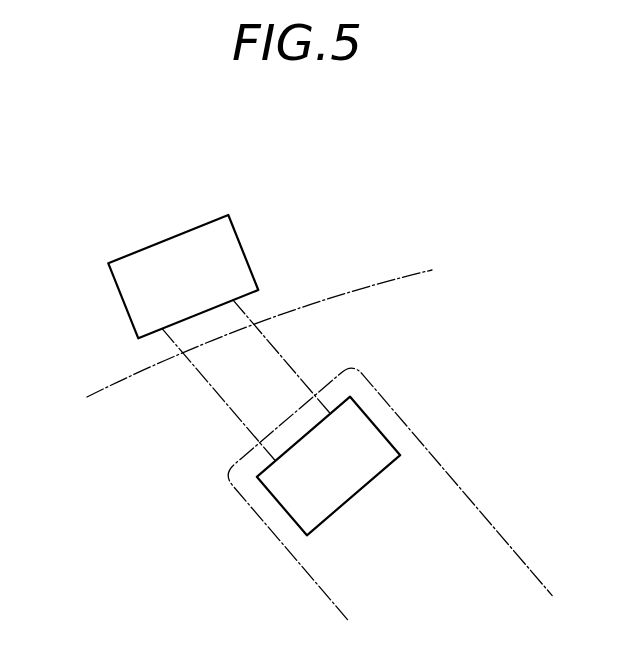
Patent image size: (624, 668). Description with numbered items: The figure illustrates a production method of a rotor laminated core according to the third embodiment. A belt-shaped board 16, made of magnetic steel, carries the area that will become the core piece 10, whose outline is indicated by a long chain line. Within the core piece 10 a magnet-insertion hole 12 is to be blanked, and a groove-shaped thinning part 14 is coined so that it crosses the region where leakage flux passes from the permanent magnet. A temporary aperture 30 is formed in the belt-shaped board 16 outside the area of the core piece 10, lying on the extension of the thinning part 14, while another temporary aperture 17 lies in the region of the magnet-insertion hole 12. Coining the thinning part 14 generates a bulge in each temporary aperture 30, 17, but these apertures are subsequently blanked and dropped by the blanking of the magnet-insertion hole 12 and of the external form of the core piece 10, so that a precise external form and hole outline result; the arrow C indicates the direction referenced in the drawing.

The temporary aperture 30 is at (187, 247).
The temporary aperture 17 is at (363, 437).
The magnet-insertion hole 12 is at (500, 536).
The thinning part 14 is at (203, 378).
The core piece 10 is at (380, 285).
The belt-shaped board 16 is at (308, 275).
The camera unit C is at (110, 297).